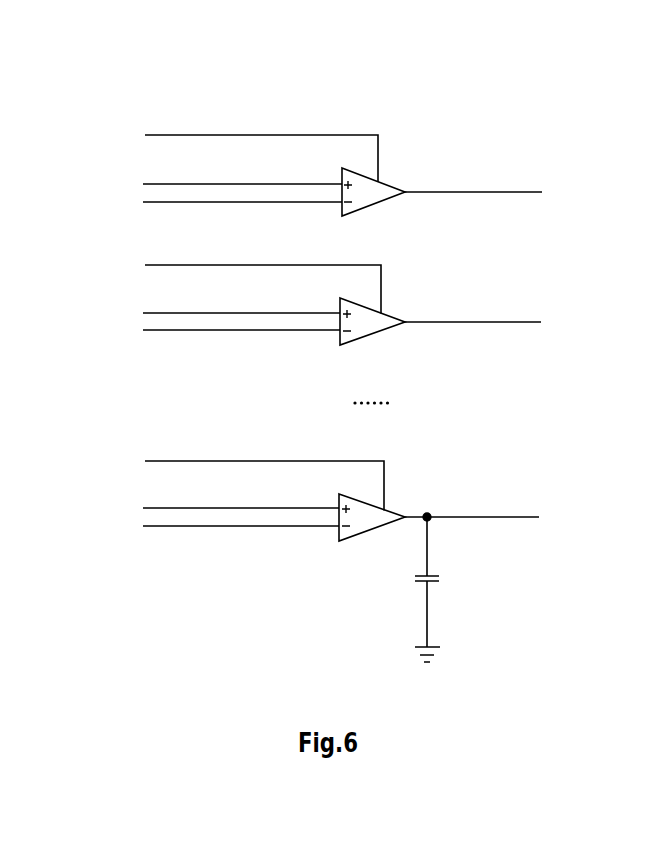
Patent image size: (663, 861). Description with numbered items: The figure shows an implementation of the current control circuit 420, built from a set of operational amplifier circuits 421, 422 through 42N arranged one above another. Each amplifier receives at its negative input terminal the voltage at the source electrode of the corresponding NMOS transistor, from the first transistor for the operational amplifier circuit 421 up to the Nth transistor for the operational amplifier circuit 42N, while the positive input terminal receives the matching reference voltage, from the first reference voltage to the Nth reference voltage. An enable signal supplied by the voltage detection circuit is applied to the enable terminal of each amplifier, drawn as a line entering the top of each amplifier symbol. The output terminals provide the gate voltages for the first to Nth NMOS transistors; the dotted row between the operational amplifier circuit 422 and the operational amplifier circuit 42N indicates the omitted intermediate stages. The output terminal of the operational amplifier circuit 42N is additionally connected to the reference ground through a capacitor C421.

The current control circuit 420 is at (93, 47).
The operational amplifier circuit 421 is at (342, 171).
The operational amplifier circuit 422 is at (342, 302).
The operational amplifier circuit 42N is at (341, 497).
The capacitor C421 is at (449, 589).